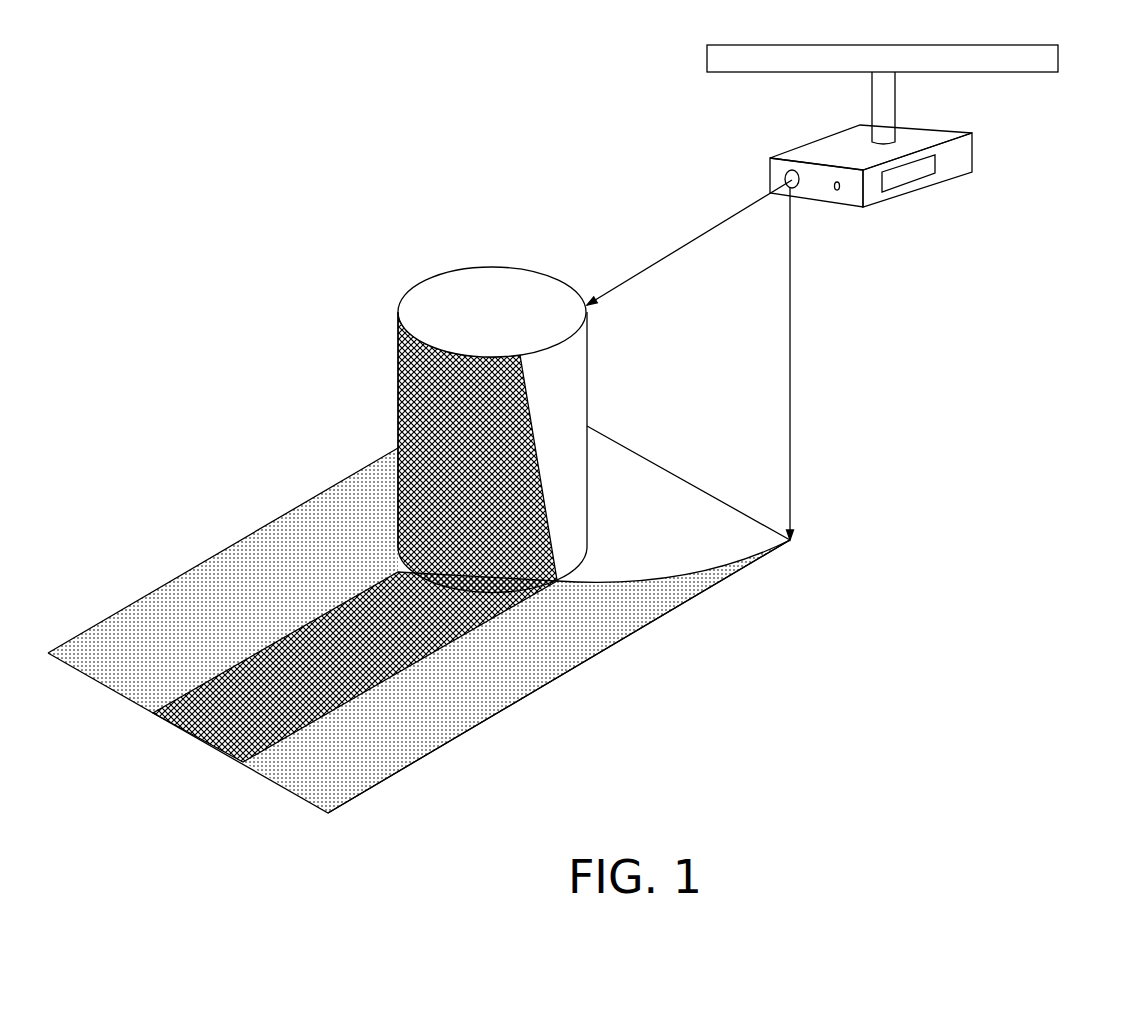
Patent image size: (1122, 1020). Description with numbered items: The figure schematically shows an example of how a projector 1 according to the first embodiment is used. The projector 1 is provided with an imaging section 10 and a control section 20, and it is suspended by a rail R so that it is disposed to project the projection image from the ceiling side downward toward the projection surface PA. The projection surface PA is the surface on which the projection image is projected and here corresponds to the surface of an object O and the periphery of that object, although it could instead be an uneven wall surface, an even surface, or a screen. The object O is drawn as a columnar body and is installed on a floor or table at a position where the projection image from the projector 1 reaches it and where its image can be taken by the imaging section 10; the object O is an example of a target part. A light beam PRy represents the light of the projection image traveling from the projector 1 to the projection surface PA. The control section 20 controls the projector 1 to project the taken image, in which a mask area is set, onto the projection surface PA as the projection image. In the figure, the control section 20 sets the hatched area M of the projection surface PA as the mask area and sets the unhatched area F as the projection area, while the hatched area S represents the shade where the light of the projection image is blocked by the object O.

The projector 1 is at (972, 148).
The imaging section 10 is at (837, 203).
The control section 20 is at (910, 172).
The rail R is at (1058, 57).
The object O is at (487, 266).
The area S (shade area) S is at (398, 400).
The area F (projection area) F is at (565, 402).
The area M (mask area) M is at (230, 568).
The projection surface PA is at (653, 622).
The light beam PRy is at (697, 238).